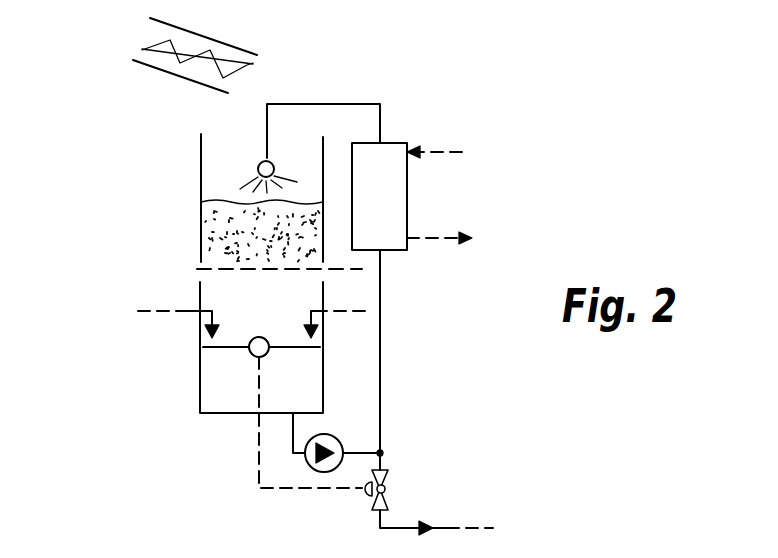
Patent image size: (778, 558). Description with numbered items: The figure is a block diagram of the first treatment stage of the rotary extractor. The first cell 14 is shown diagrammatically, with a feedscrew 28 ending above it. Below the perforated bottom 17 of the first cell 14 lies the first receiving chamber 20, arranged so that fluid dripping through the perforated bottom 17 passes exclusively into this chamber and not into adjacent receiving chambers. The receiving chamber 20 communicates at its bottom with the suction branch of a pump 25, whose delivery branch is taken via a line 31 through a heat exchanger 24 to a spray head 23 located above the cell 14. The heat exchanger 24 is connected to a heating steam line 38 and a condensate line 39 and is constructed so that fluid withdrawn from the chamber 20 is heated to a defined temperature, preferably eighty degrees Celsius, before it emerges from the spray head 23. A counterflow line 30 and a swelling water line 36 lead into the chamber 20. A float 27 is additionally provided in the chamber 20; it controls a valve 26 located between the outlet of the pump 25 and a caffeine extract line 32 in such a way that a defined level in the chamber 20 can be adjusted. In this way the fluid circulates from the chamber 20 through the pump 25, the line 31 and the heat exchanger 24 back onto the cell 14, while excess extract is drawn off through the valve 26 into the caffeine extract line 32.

The first cell 14 is at (227, 150).
The perforated bottom 17 is at (330, 270).
The first receiving chamber 20 is at (238, 320).
The spray head 23 is at (310, 148).
The heat exchanger 24 is at (393, 196).
The pump 25 is at (335, 437).
The valve 26 is at (387, 487).
The float 27 is at (267, 338).
The feedscrew 28 is at (237, 46).
The counterflow line 30 is at (327, 311).
The line 31 is at (382, 378).
The caffeine extract line 32 is at (443, 528).
The swelling water line 36 is at (184, 311).
The heating steam line 38 is at (450, 152).
The condensate line 39 is at (450, 238).